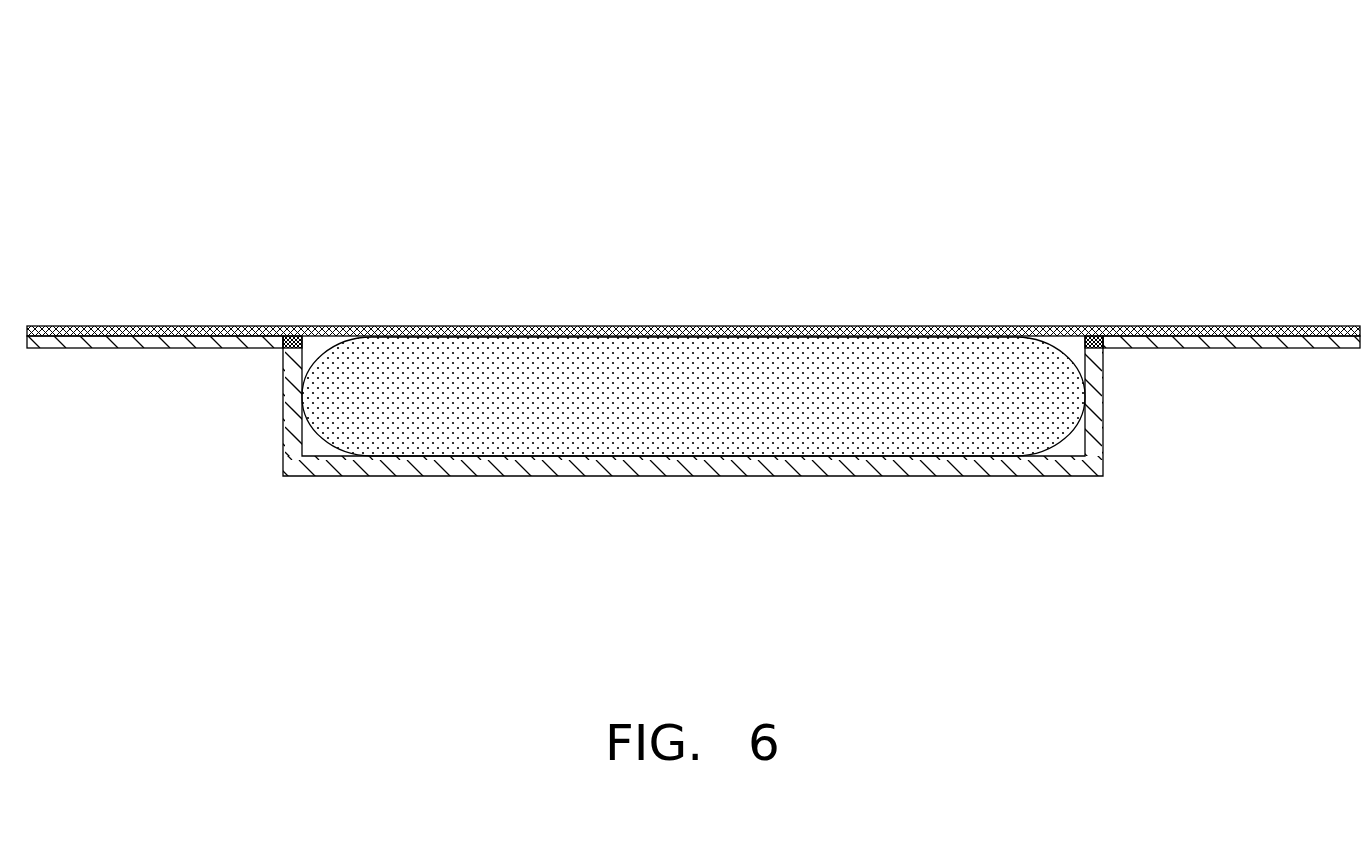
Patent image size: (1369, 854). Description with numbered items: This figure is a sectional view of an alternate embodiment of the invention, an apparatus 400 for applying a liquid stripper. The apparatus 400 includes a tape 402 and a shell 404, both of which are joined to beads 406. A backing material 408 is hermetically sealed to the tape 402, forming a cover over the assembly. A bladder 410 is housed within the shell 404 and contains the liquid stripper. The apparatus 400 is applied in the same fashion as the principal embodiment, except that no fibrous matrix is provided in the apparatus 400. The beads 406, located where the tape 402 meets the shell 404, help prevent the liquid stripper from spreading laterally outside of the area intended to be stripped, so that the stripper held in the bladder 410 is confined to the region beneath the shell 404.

The apparatus 400 is at (693, 327).
The tape 402 is at (183, 348).
The shell 404 is at (528, 477).
The beads 406 is at (290, 326).
The backing material 408 is at (342, 326).
The bladder 410 is at (670, 378).